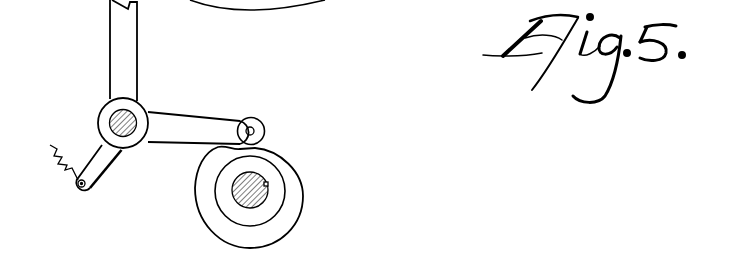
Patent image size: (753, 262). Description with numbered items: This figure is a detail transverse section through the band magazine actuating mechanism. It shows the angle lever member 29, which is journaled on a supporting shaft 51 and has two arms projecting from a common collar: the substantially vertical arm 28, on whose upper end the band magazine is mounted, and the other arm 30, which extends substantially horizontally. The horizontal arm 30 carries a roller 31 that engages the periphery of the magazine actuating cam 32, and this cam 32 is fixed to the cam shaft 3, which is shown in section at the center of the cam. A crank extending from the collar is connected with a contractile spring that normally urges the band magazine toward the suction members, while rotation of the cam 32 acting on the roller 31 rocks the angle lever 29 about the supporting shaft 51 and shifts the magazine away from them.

The substantially vertical arm 28 is at (121, 17).
The angle lever member 29 is at (105, 113).
The arm 30 is at (178, 130).
The roller 31 is at (268, 126).
The magazine actuating cam 32 is at (307, 195).
The supporting shaft 51 is at (126, 137).
The cam shaft 3 is at (250, 188).